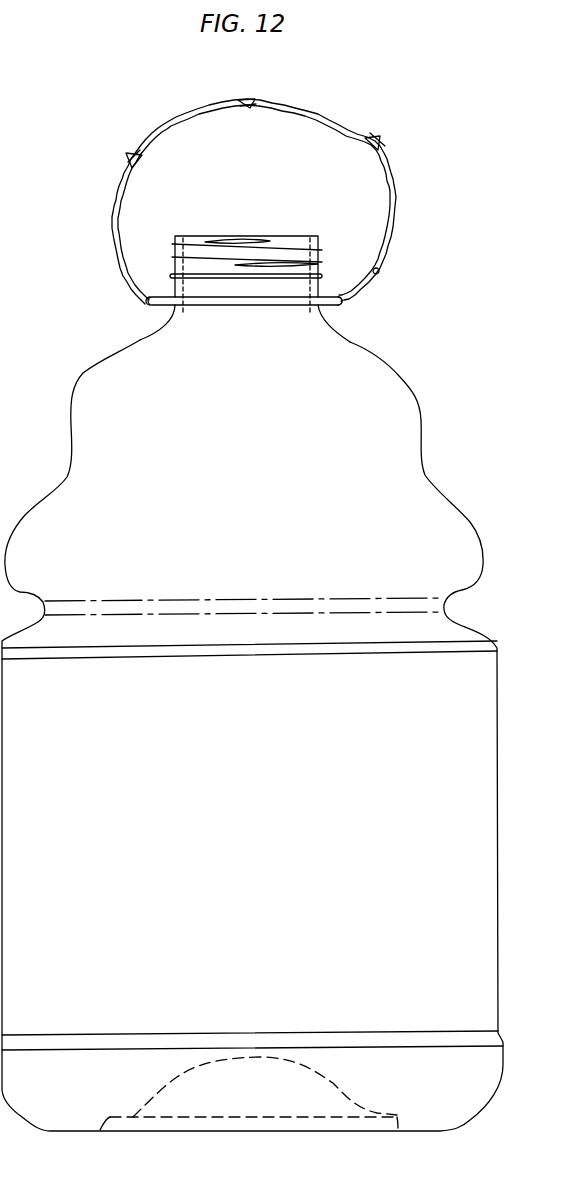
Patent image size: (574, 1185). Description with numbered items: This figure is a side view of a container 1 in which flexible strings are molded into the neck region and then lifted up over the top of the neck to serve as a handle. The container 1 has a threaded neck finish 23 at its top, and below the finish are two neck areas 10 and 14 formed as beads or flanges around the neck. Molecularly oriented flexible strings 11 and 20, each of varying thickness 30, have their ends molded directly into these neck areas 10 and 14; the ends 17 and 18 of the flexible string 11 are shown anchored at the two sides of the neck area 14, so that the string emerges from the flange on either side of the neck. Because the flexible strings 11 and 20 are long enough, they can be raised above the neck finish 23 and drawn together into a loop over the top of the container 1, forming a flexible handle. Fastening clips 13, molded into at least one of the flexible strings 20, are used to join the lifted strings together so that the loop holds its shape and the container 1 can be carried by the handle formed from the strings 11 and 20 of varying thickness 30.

The container 1 is at (390, 368).
The neck area 10 is at (340, 297).
The flexible string 11 is at (393, 240).
The fastening clip 13 is at (373, 142).
The neck area 14 is at (155, 297).
The end of flexible string 17 is at (338, 300).
The end of flexible string 18 is at (147, 305).
The flexible string 20 is at (380, 277).
The neck finish 23 is at (268, 243).
The varying thickness 30 is at (393, 180).